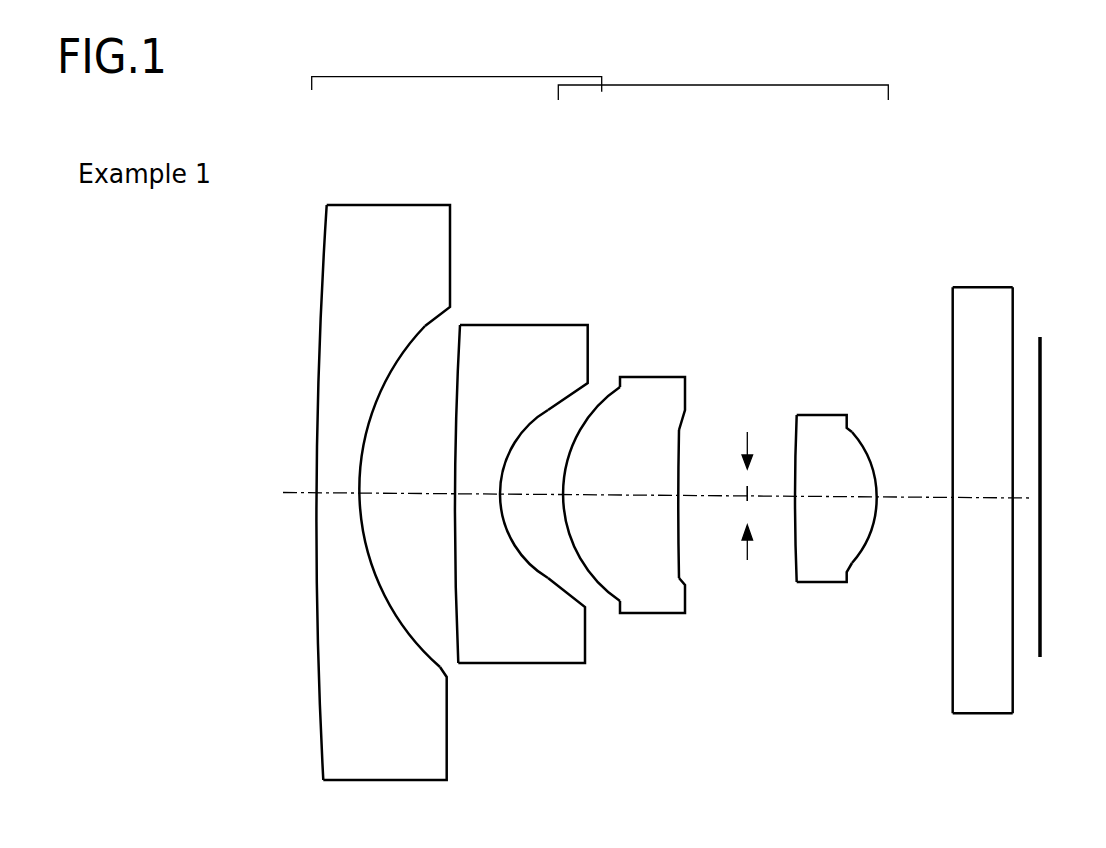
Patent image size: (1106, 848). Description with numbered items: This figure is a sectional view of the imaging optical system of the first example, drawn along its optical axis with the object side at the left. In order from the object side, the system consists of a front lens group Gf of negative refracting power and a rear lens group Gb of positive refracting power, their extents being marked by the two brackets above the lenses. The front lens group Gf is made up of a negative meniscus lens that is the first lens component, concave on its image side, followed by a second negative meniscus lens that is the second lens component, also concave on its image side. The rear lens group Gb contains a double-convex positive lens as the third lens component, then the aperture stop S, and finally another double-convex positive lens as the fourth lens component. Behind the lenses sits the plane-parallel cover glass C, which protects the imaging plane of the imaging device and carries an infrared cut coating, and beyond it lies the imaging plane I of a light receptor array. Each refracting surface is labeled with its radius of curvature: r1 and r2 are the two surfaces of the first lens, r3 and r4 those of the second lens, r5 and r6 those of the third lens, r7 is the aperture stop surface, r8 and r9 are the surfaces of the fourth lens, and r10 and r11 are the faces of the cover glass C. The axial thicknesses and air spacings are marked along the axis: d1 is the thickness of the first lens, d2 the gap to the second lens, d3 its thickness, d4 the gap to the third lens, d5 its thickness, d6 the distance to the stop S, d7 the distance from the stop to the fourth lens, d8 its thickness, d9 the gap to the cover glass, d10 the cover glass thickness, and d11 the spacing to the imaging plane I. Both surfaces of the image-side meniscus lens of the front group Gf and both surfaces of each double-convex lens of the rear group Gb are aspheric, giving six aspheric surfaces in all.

The front lens group Gf is at (457, 71).
The rear lens group Gb is at (723, 75).
The radius of curvature of lens surface r1 is at (322, 277).
The radius of curvature of lens surface r2 is at (427, 327).
The radius of curvature of lens surface r3 is at (453, 353).
The radius of curvature of lens surface r4 is at (557, 393).
The radius of curvature of lens surface r5 is at (588, 405).
The radius of curvature of lens surface r6 is at (683, 467).
The radius of curvature of lens surface r7 is at (747, 434).
The radius of curvature of lens surface r8 is at (795, 462).
The radius of curvature of lens surface r9 is at (861, 447).
The radius of curvature of lens surface r10 is at (952, 330).
The radius of curvature of lens surface r11 is at (1014, 331).
The lens thickness or air spacing d1 is at (337, 511).
The lens thickness or air spacing d2 is at (408, 514).
The lens thickness or air spacing d3 is at (478, 512).
The lens thickness or air spacing d4 is at (532, 512).
The lens thickness or air spacing d5 is at (623, 515).
The lens thickness or air spacing d6 is at (713, 515).
The lens thickness or air spacing d7 is at (772, 515).
The lens thickness or air spacing d8 is at (833, 516).
The lens thickness or air spacing d9 is at (910, 516).
The lens thickness or air spacing d10 is at (980, 516).
The lens thickness or air spacing d11 is at (1025, 498).
The aperture stop S is at (748, 548).
The cover glass C is at (976, 513).
The imaging plane I is at (1042, 577).